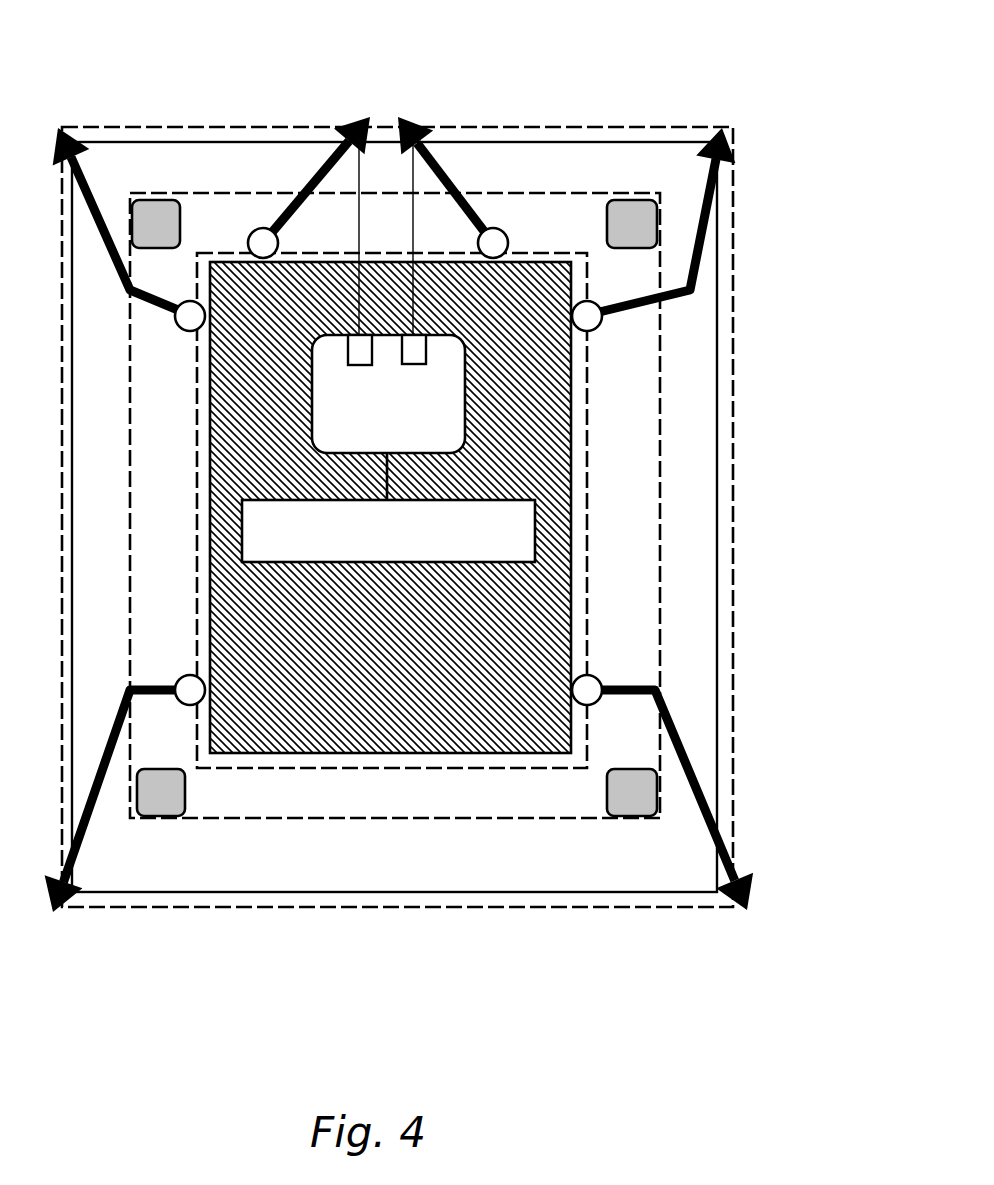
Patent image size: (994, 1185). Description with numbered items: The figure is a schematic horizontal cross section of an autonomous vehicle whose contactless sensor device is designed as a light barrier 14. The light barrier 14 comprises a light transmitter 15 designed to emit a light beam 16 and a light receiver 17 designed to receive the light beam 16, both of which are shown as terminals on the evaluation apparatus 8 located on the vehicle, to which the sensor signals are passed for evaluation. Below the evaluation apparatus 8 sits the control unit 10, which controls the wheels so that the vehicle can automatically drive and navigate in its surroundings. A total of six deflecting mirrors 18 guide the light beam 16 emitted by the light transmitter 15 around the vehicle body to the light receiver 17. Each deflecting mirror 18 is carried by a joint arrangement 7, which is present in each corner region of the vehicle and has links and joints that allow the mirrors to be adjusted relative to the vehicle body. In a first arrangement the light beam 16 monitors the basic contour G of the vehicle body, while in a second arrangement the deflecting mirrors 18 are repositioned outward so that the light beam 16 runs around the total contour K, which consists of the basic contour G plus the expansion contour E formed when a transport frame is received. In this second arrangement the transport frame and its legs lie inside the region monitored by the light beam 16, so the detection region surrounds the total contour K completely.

The light barrier 14 is at (748, 168).
The light beam 16 is at (733, 368).
The deflecting mirrors 18 is at (58, 125).
The joint arrangement 7 is at (157, 672).
The evaluation apparatus 8 is at (395, 437).
The control unit 10 is at (402, 547).
The light transmitter 15 is at (418, 363).
The light receiver 17 is at (360, 363).
The expansion contour E is at (305, 820).
The basic contour G is at (345, 770).
The total contour K is at (200, 912).